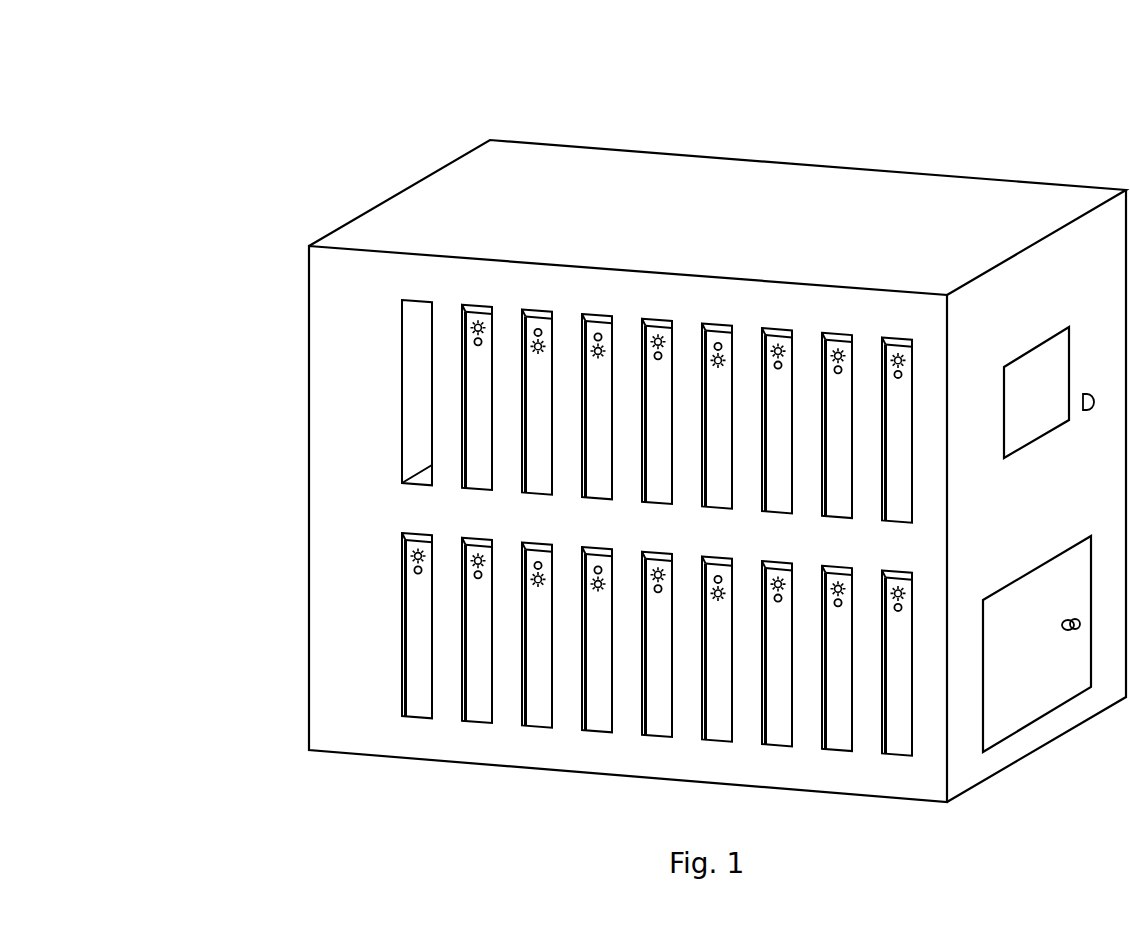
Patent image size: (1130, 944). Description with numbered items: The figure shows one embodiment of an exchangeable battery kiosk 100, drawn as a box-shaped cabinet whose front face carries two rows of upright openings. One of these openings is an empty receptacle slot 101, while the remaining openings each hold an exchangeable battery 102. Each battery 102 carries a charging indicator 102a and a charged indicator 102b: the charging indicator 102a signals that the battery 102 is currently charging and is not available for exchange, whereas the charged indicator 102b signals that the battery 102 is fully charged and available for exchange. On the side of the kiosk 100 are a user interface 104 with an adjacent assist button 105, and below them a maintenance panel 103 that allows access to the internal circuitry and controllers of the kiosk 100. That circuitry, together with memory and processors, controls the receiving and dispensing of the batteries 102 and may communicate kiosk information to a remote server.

The kiosk 100 is at (250, 88).
The receptacle slot 101 is at (402, 385).
The exchangeable battery 102 is at (482, 306).
The charging indicator 102a is at (374, 548).
The charged indicator 102b is at (372, 582).
The maintenance panel 103 is at (1037, 644).
The user interface 104 is at (1036, 392).
The assist button 105 is at (1090, 391).